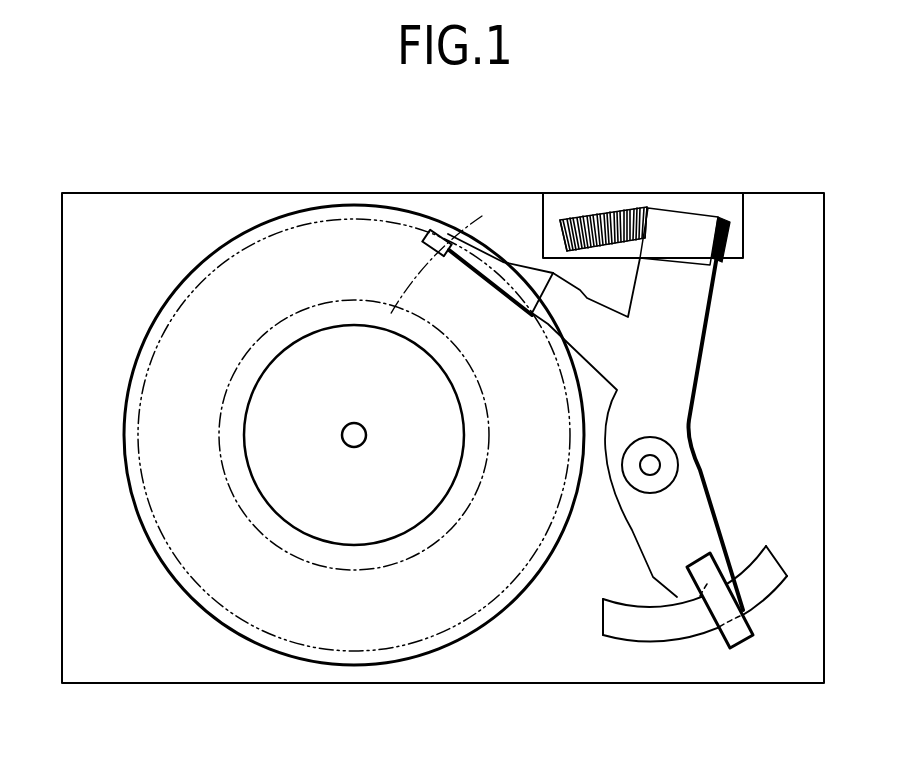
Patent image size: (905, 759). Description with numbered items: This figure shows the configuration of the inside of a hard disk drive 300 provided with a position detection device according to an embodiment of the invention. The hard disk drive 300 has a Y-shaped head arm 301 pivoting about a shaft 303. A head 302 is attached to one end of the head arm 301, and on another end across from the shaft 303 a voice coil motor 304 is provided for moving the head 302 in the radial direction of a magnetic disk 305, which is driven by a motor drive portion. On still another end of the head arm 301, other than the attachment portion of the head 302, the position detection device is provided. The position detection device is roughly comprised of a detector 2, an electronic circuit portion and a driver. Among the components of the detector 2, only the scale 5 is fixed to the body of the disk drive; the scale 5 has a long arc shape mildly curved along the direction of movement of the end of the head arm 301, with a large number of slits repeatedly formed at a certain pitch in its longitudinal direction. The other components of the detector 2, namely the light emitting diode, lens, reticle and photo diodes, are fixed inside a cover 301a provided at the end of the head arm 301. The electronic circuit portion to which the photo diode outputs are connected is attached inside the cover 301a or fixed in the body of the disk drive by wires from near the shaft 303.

The hard disk drive 300 is at (250, 164).
The detector 2 is at (656, 136).
The scale 5 is at (607, 206).
The cover 301a is at (706, 213).
The head arm 301 is at (706, 356).
The head 302 is at (441, 231).
The shaft 303 is at (679, 465).
The voice coil motor 304 is at (713, 651).
The magnetic disk 305 is at (197, 605).